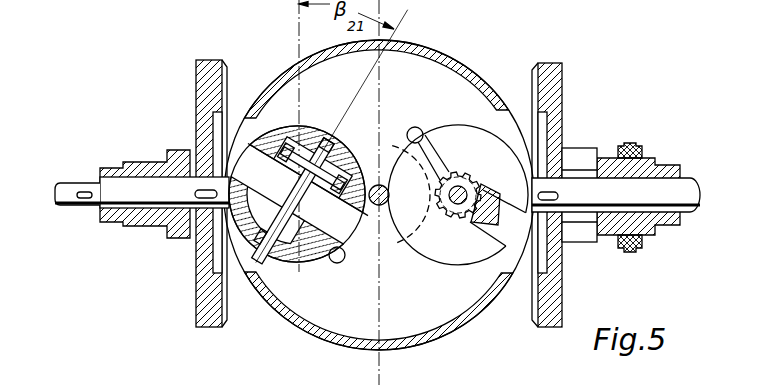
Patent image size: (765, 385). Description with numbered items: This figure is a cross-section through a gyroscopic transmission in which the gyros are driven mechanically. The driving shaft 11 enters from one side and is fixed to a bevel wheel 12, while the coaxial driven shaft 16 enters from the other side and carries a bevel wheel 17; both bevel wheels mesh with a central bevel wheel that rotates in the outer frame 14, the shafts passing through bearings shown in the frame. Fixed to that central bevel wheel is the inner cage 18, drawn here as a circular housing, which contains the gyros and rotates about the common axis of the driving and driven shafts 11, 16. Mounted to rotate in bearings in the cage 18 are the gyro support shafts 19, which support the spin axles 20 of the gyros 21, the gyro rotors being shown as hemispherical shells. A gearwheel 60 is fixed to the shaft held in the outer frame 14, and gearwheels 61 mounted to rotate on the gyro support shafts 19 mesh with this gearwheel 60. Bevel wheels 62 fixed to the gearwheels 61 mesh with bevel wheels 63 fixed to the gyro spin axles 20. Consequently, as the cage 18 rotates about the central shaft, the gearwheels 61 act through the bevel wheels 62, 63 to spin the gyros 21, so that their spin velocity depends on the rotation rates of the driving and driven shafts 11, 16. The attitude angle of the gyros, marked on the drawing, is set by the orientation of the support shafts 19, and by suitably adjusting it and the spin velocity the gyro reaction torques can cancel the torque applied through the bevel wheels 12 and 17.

The driving shaft 11 is at (142, 192).
The bevel wheel 12 is at (207, 88).
The outer frame 14 is at (171, 156).
The driven shaft 16 is at (648, 204).
The bevel wheel 17 is at (547, 88).
The inner cage 18 is at (420, 316).
The gyro support shaft 19 is at (296, 170).
The spin axle 20 is at (277, 257).
The gyro 21 is at (322, 252).
The gearwheel 60 is at (434, 178).
The gearwheel 61 is at (478, 208).
The bevel wheel 62 is at (488, 228).
The bevel wheel 63 is at (325, 193).